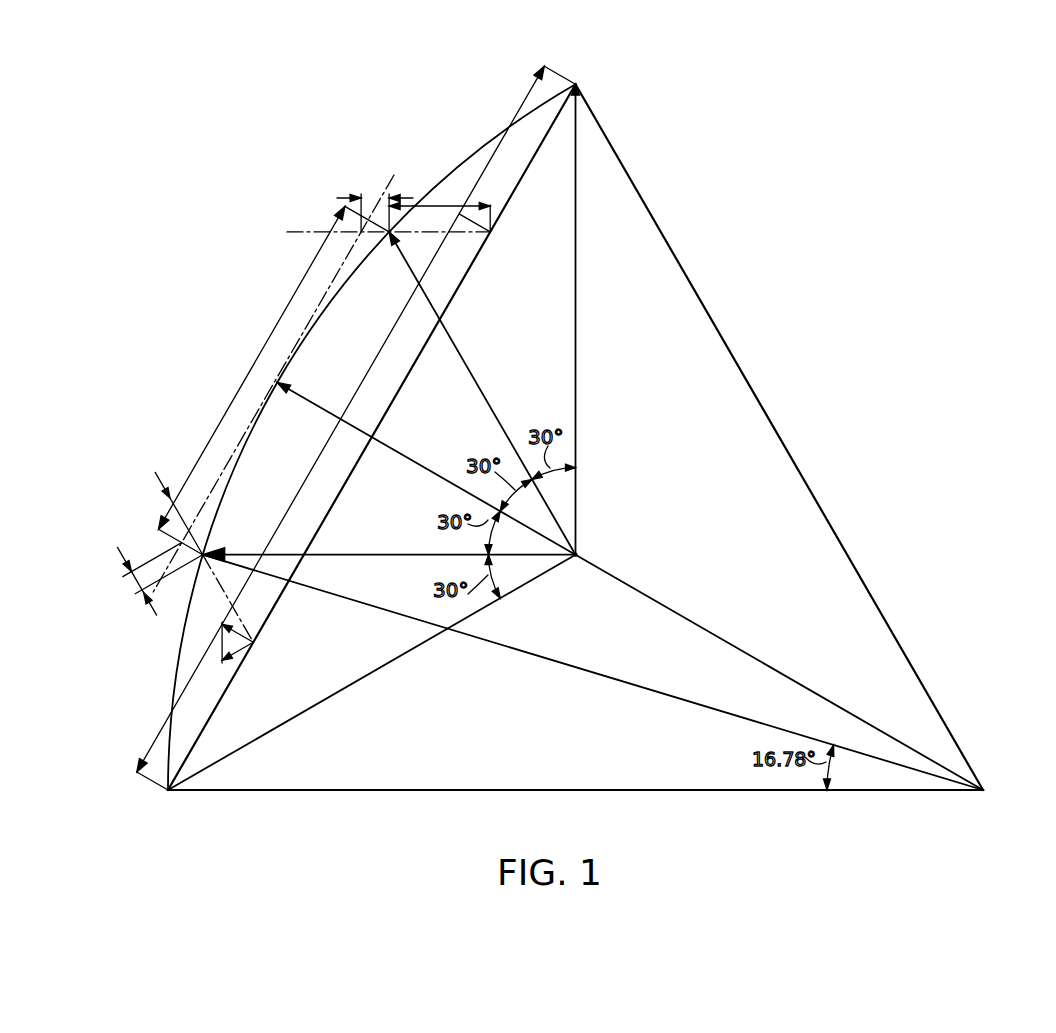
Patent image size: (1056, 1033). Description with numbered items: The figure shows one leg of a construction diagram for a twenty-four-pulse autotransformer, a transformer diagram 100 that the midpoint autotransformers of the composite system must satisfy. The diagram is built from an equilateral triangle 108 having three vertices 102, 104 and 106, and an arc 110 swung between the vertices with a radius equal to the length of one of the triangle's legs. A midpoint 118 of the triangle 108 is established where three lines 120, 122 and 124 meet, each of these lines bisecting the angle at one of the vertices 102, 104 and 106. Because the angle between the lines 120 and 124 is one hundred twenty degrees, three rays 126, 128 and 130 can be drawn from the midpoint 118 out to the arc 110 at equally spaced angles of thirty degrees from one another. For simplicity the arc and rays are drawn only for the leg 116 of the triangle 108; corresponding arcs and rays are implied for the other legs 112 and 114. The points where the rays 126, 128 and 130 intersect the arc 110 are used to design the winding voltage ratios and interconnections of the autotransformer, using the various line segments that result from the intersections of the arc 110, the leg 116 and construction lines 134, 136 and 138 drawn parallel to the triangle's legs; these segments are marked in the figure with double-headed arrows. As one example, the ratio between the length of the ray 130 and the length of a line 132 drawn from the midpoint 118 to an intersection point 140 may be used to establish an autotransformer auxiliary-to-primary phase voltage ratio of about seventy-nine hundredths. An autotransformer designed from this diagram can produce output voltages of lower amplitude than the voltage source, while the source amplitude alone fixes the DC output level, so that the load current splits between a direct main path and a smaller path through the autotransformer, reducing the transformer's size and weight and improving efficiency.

The transformer diagram 100 is at (785, 253).
The vertex 102 is at (576, 84).
The vertex 104 is at (168, 790).
The vertex 106 is at (983, 790).
The equilateral triangle 108 is at (575, 466).
The arc 110 is at (472, 152).
The leg 112 is at (770, 405).
The leg 114 is at (695, 790).
The leg 116 is at (220, 699).
The midpoint 118 is at (576, 555).
The line 120 is at (576, 402).
The line 122 is at (712, 633).
The line 124 is at (408, 659).
The ray 126 is at (421, 288).
The ray 128 is at (330, 413).
The ray 130 is at (336, 555).
The line 132 is at (768, 718).
The construction line 134 is at (162, 490).
The construction line 136 is at (290, 232).
The construction line 138 is at (392, 196).
The intersection point 140 is at (203, 555).